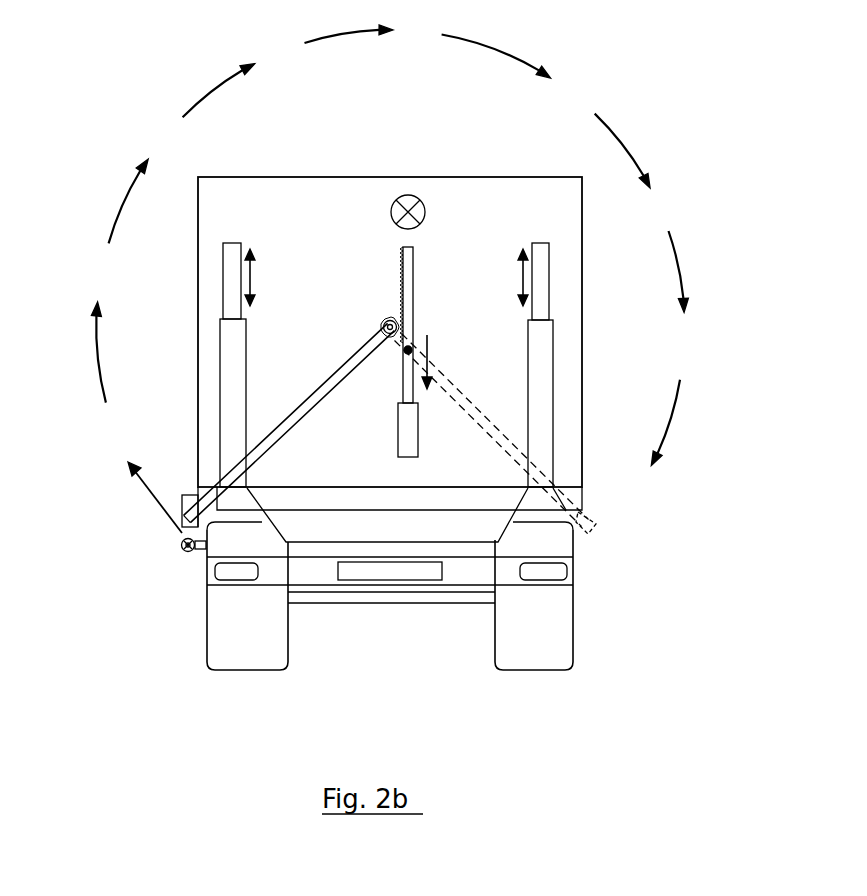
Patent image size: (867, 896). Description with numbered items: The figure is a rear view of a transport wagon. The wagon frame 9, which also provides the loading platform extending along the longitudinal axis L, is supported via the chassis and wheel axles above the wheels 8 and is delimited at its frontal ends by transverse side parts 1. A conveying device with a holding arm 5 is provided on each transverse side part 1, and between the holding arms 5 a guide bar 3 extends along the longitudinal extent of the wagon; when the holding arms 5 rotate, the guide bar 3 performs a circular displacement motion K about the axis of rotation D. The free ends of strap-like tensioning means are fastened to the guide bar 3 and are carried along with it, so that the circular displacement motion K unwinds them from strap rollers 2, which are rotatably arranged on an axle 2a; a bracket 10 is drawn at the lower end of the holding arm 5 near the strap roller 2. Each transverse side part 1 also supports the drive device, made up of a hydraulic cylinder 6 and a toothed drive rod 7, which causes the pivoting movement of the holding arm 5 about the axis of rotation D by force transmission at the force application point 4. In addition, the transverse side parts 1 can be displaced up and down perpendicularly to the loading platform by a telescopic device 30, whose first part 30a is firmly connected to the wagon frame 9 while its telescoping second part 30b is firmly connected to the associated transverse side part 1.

The transverse side part 1 is at (567, 303).
The strap roller 2 is at (188, 556).
The axle 2a is at (180, 548).
The guide bar 3 is at (183, 495).
The force application point 4 is at (398, 324).
The holding arm 5 is at (328, 392).
The hydraulic cylinder 6 is at (399, 430).
The toothed drive rod 7 is at (414, 272).
The wheels 8 is at (246, 655).
The wagon frame 9 is at (395, 500).
The bracket 10 is at (180, 533).
The telescopic device 30 is at (561, 264).
The first part 30a is at (543, 404).
The second part 30b is at (543, 243).
The axis of rotation D is at (384, 320).
The circular displacement motion K is at (122, 200).
The longitudinal axis L is at (411, 195).